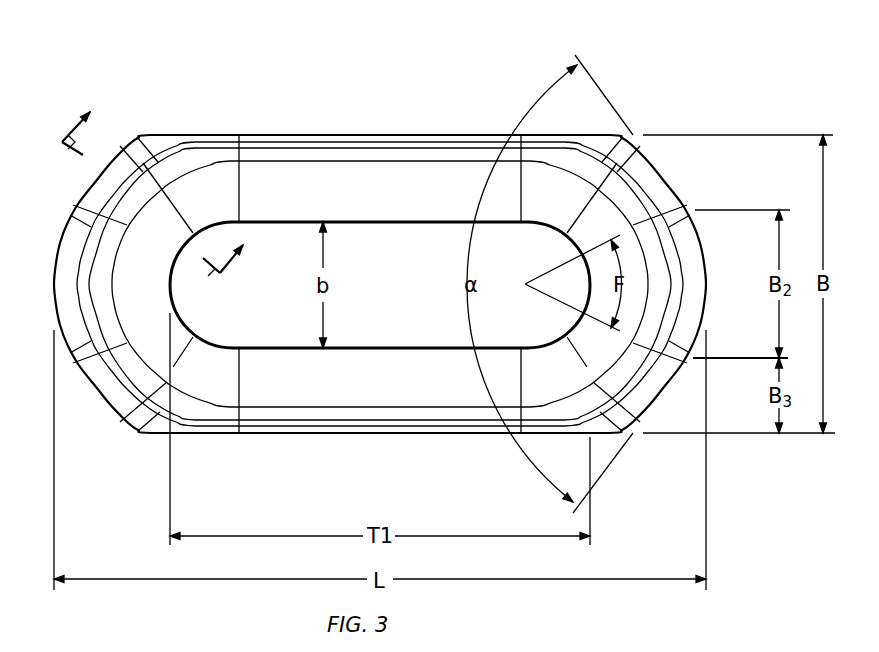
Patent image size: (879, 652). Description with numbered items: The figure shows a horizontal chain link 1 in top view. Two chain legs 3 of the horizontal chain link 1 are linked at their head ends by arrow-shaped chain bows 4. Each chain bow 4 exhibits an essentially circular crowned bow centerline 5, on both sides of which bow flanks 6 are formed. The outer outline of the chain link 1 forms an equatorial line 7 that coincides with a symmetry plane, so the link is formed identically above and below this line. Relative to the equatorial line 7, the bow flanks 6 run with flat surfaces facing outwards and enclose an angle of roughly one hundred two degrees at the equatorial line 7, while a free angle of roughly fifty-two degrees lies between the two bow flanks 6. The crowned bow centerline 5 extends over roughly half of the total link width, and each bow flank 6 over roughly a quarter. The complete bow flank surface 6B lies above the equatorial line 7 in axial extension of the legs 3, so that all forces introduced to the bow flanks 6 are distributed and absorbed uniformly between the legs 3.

The horizontal chain link 1 is at (256, 75).
The chain legs 3 is at (325, 180).
The chain bow 4 is at (748, 173).
The bow centerline 5 is at (53, 287).
The bow flanks 6 is at (83, 377).
The bow flank surface 6B is at (120, 165).
The equatorial line 7 is at (205, 135).